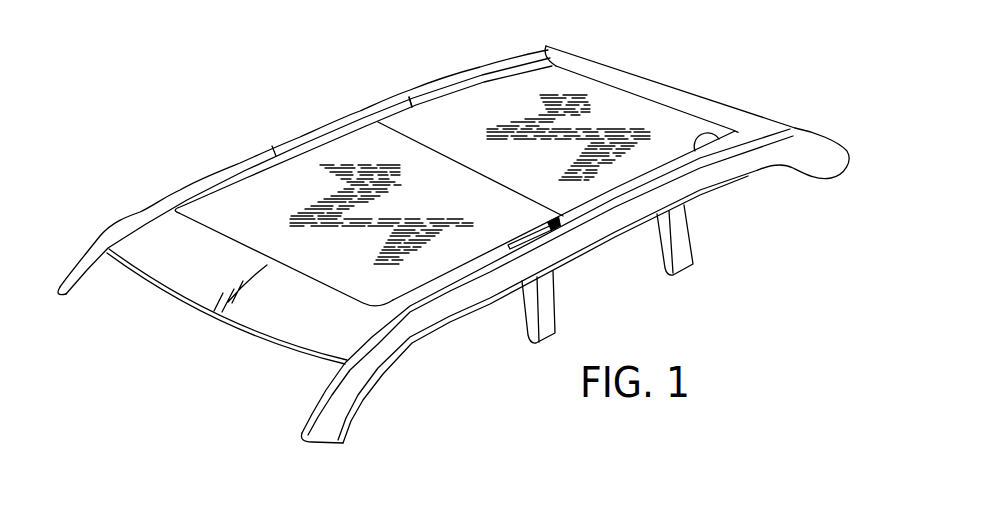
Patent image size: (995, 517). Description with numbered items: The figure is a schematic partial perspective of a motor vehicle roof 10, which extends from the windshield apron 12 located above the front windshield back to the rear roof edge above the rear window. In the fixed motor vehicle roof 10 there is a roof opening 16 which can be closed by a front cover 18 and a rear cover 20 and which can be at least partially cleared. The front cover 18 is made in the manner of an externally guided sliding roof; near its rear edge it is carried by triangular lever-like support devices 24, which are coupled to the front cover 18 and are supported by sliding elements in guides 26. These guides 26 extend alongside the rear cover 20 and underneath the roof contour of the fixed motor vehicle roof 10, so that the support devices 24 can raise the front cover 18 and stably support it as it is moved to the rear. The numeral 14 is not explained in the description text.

The motor vehicle roof 10 is at (214, 256).
The windshield apron 12 is at (196, 300).
The roof rail 14 is at (677, 89).
The roof opening 16 is at (272, 148).
The front cover 18 is at (290, 206).
The rear cover 20 is at (513, 110).
The support device 24 is at (557, 231).
The guide 26 is at (410, 92).